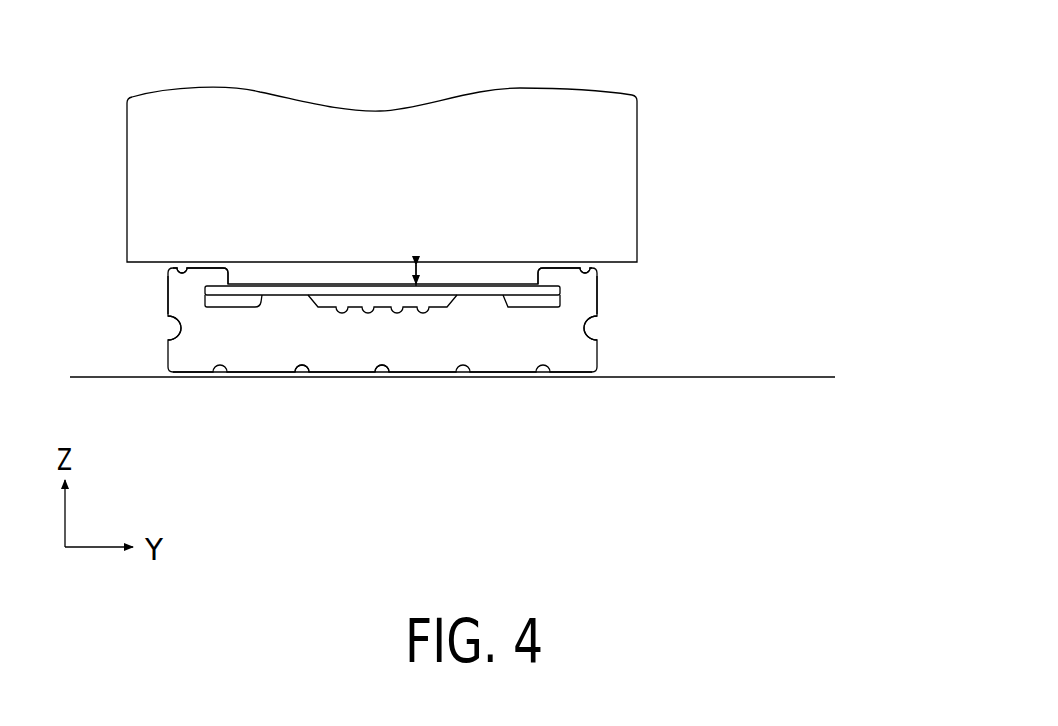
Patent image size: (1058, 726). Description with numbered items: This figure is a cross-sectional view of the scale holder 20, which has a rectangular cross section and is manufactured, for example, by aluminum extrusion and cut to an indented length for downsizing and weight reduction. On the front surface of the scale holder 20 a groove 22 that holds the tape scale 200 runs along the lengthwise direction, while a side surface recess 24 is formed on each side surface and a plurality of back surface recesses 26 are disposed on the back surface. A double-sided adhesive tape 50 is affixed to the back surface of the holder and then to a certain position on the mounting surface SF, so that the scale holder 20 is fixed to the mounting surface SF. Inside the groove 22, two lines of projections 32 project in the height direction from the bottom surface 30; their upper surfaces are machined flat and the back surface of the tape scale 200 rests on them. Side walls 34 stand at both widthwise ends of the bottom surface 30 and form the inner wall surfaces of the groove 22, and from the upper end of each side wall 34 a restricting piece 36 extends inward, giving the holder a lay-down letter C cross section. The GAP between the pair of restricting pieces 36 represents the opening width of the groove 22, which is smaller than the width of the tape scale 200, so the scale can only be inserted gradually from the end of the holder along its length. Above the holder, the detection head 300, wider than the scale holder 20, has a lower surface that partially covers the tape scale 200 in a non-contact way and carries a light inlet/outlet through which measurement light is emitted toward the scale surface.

The detection head 300 is at (637, 134).
The scale holder 20 is at (722, 304).
The restricting piece 36 is at (213, 266).
The side wall 34 is at (168, 296).
The side surface recess 24 is at (180, 326).
The groove 22 is at (340, 284).
The tape scale 200 is at (255, 286).
The bottom surface 30 is at (522, 305).
The projection 32 is at (260, 306).
The gap GAP is at (418, 263).
The back surface recess 26 is at (375, 378).
The double-sided adhesive tape 50 is at (520, 378).
The mounting surface SF is at (817, 373).